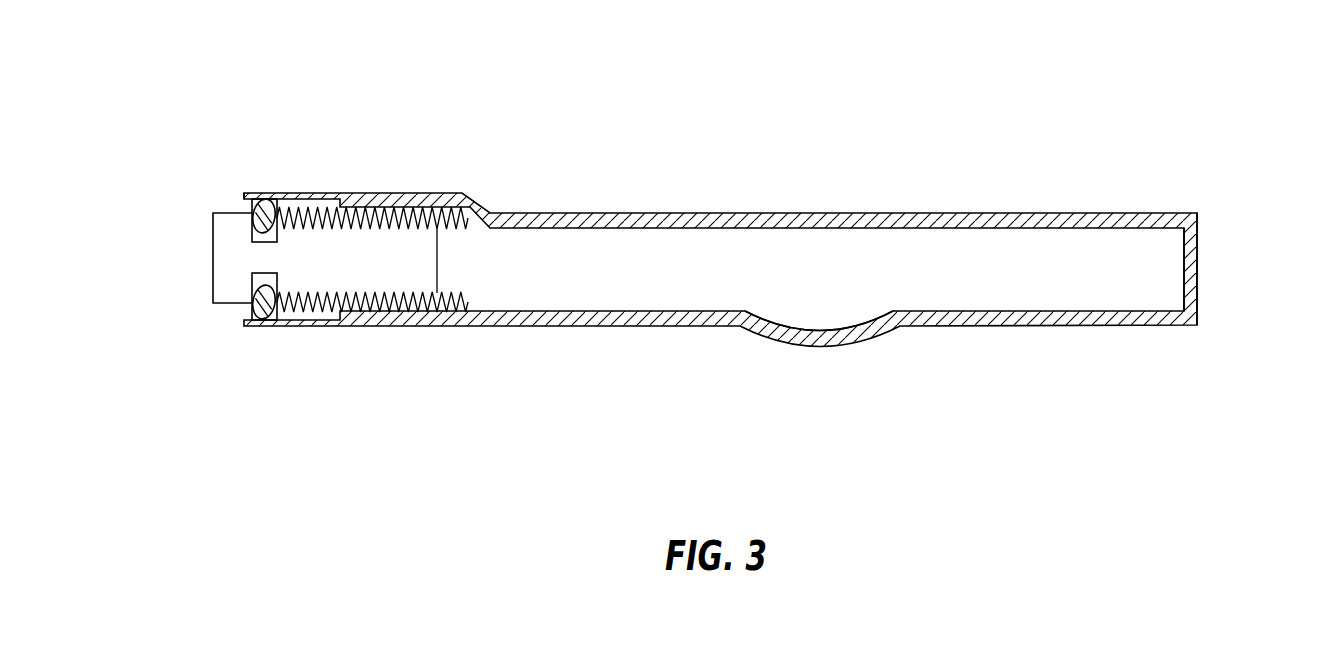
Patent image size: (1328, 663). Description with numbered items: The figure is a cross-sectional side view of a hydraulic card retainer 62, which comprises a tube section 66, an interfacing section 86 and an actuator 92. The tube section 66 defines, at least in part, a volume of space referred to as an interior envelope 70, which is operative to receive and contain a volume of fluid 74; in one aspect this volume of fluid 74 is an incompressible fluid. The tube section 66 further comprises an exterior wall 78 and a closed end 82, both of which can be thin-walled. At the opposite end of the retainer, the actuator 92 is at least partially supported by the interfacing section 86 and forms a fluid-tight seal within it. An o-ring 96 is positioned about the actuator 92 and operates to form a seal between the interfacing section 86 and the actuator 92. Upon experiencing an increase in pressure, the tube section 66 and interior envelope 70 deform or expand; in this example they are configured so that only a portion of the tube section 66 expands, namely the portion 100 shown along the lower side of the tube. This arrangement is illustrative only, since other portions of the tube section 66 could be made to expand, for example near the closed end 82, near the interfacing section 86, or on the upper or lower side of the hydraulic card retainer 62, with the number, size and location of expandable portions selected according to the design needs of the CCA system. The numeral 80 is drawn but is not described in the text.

The hydraulic card retainer 62 is at (241, 155).
The tube section 66 is at (770, 140).
The interior envelope 70 is at (1020, 292).
The volume of fluid 74 is at (1111, 282).
The exterior wall 78 is at (1034, 212).
The proximal flange 80 is at (218, 194).
The closed end 82 is at (1198, 272).
The interfacing section 86 is at (416, 150).
The actuator 92 is at (228, 262).
The o-ring 96 is at (262, 319).
The portion 100 is at (845, 346).